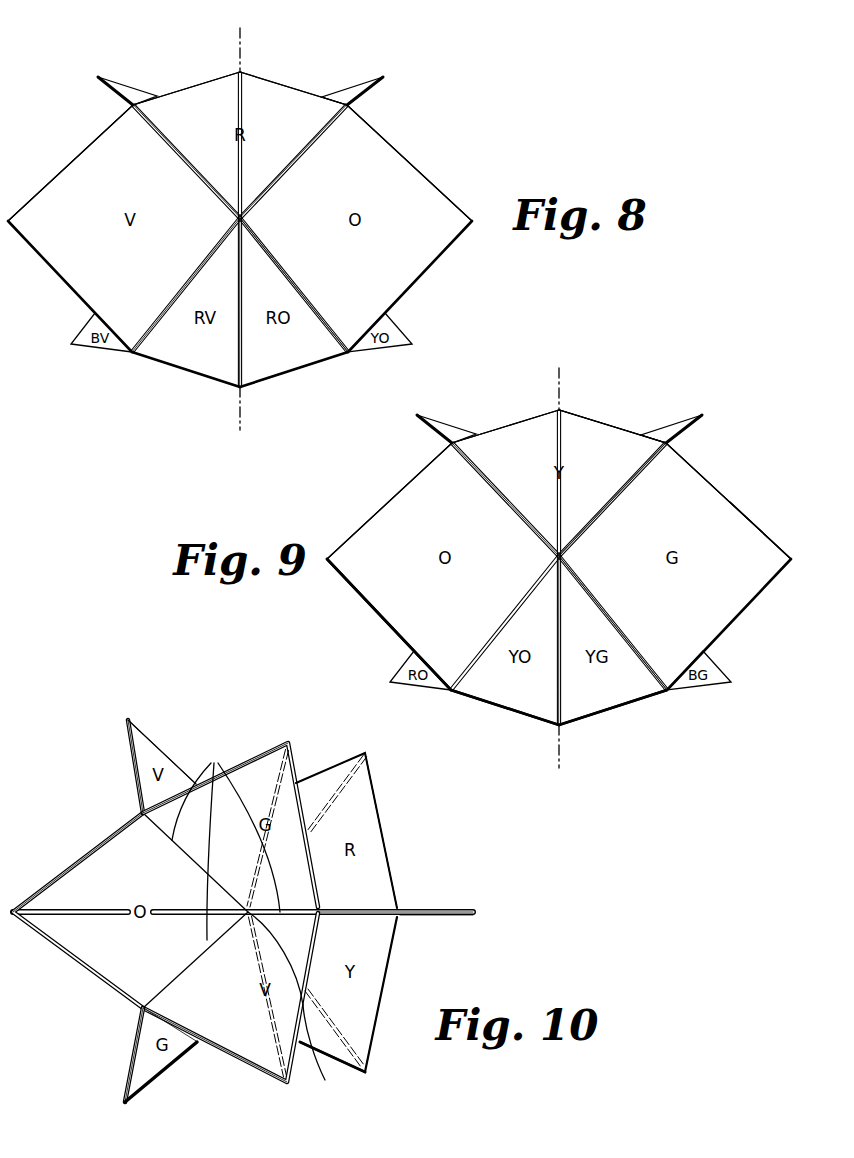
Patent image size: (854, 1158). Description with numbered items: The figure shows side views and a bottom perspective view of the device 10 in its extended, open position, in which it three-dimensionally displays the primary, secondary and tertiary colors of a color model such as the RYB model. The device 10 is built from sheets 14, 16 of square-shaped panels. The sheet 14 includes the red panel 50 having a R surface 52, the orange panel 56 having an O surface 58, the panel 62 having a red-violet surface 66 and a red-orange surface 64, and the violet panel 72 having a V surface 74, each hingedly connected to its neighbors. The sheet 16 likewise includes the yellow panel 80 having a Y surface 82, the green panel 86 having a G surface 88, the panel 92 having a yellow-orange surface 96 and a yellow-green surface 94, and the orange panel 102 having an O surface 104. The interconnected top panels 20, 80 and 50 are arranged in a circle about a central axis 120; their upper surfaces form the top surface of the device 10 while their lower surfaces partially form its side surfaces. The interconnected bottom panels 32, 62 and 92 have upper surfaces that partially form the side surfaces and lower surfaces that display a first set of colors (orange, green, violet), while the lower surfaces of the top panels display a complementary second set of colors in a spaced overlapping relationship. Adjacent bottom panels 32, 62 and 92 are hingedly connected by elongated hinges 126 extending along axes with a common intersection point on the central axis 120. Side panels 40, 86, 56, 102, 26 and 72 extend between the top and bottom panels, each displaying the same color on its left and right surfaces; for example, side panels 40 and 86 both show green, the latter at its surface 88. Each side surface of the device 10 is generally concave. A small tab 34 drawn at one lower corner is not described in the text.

In FIG. 8, the device 10 is at (462, 82).
In FIG. 9, the device 10 is at (712, 365).
In FIG. 10, the device 10 is at (447, 828).
In FIG. 8, the sheet 14 is at (397, 143).
In FIG. 9, the sheet 16 is at (705, 470).
In FIG. 8, the top panel 20 is at (128, 90).
In FIG. 9, the top panel 20 is at (690, 418).
In FIG. 10, the side panel 26 is at (122, 740).
In FIG. 8, the bottom panel 32 is at (100, 352).
In FIG. 10, the bottom panel 32 is at (88, 868).
In FIG. 9, the lower right tab 34 is at (705, 688).
In FIG. 10, the side panel 40 is at (125, 1068).
In FIG. 8, the red panel 50 is at (277, 80).
In FIG. 9, the red panel 50 is at (466, 432).
In FIG. 10, the red panel 50 is at (383, 833).
In FIG. 8, the R surface 52 is at (205, 90).
In FIG. 8, the orange panel 56 is at (422, 172).
In FIG. 10, the orange panel 56 is at (437, 906).
In FIG. 8, the O surface 58 is at (447, 212).
In FIG. 8, the panel 62 is at (268, 385).
In FIG. 10, the panel 62 is at (268, 745).
In FIG. 8, the red-orange surface 64 is at (300, 357).
In FIG. 9, the red-orange surface 64 is at (422, 688).
In FIG. 8, the red-violet surface 66 is at (198, 362).
In FIG. 8, the violet panel 72 is at (50, 180).
In FIG. 10, the violet panel 72 is at (147, 728).
In FIG. 8, the V surface 74 is at (108, 135).
In FIG. 8, the yellow panel 80 is at (356, 84).
In FIG. 9, the yellow panel 80 is at (605, 423).
In FIG. 10, the yellow panel 80 is at (385, 998).
In FIG. 9, the Y surface 82 is at (517, 438).
In FIG. 9, the green panel 86 is at (750, 513).
In FIG. 10, the green panel 86 is at (167, 1056).
In FIG. 9, the G surface 88 is at (706, 500).
In FIG. 8, the panel 92 is at (388, 350).
In FIG. 9, the panel 92 is at (640, 705).
In FIG. 10, the panel 92 is at (258, 1072).
In FIG. 9, the yellow-green surface 94 is at (585, 703).
In FIG. 9, the yellow-orange surface 96 is at (513, 697).
In FIG. 9, the orange panel 102 is at (385, 500).
In FIG. 10, the orange panel 102 is at (450, 918).
In FIG. 9, the O surface 104 is at (393, 605).
In FIG. 8, the central axis 120 is at (244, 49).
In FIG. 9, the central axis 120 is at (563, 408).
In FIG. 10, the central axis 120 is at (329, 1048).
In FIG. 10, the elongated hinges 126 is at (237, 871).